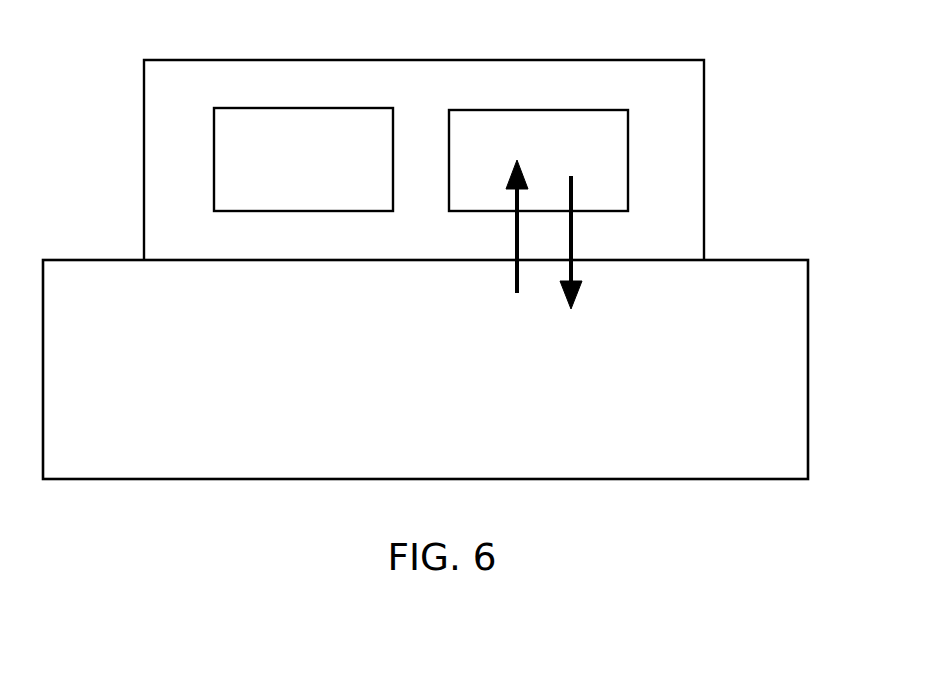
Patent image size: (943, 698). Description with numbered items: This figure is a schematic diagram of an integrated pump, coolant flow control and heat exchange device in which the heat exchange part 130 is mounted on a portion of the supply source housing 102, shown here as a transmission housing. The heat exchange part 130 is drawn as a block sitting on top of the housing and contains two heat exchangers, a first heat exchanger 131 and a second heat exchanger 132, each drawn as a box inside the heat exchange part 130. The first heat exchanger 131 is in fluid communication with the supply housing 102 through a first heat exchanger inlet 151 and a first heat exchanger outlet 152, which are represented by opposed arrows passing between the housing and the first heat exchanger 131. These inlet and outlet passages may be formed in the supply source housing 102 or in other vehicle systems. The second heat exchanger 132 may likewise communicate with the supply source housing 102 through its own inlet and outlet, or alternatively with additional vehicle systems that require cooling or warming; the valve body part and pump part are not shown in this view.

The supply source housing 102 is at (748, 259).
The heat exchange part 130 is at (388, 58).
The first heat exchanger 131 is at (540, 109).
The second heat exchanger 132 is at (372, 107).
The first heat exchanger inlet 151 is at (514, 240).
The first heat exchanger outlet 152 is at (575, 239).